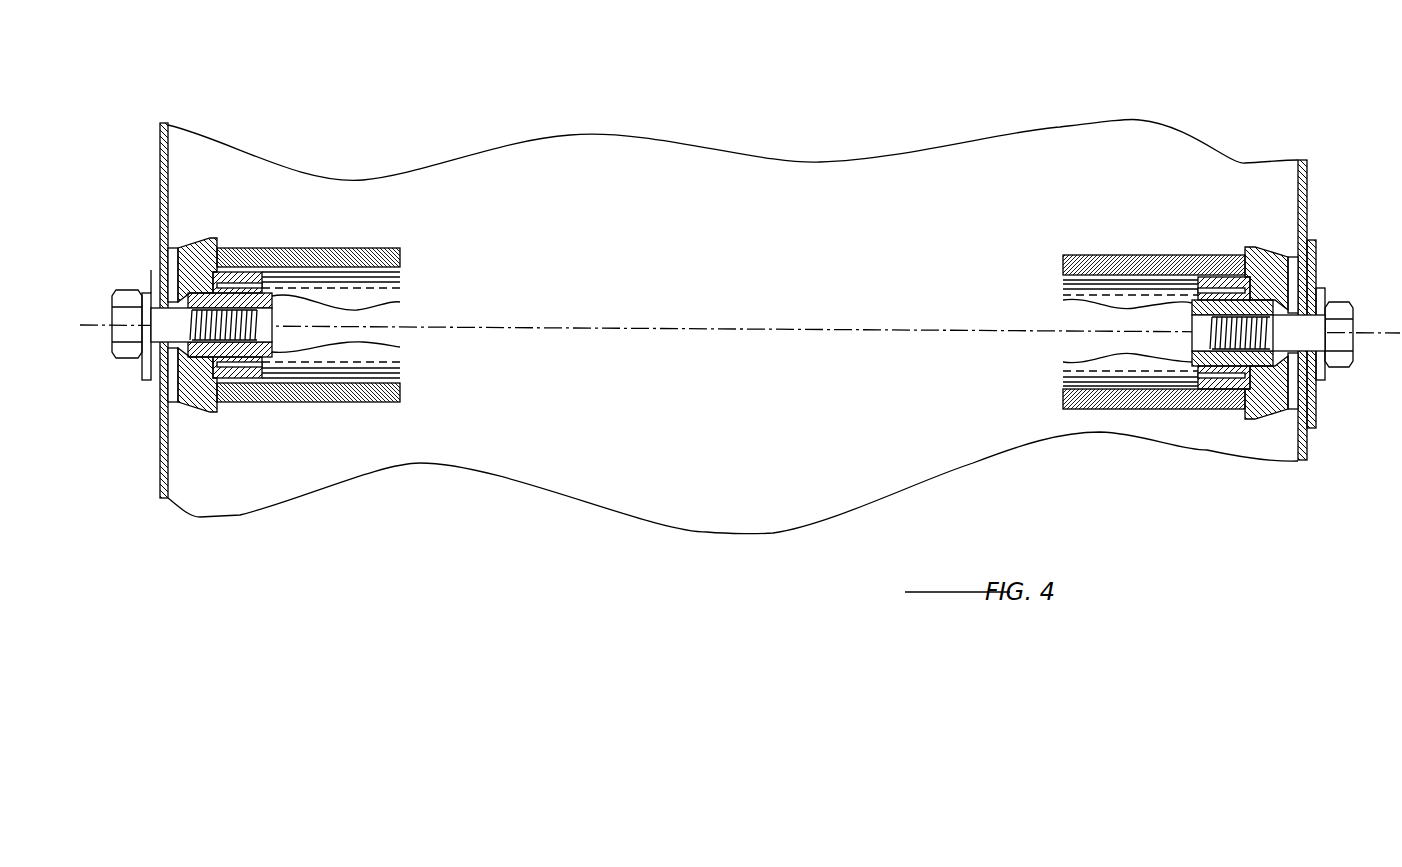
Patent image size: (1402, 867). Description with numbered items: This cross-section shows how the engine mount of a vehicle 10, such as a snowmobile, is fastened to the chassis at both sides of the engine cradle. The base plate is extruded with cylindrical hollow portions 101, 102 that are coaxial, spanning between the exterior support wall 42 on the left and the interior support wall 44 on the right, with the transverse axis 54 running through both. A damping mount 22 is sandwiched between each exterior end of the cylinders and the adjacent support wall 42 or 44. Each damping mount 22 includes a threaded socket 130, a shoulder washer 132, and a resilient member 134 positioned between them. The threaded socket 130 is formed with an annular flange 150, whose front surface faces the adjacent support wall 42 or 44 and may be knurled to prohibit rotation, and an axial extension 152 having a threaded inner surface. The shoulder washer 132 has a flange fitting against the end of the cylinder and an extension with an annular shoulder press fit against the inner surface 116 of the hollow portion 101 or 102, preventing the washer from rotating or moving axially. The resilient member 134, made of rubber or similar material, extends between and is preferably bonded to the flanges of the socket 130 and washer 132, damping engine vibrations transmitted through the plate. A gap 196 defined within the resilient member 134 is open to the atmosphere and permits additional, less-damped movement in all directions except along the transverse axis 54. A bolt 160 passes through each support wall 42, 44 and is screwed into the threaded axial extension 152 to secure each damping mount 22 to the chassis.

The vehicle 10 is at (143, 178).
The damping mount 22 is at (194, 228).
The exterior support wall 42 is at (1296, 441).
The interior support wall 44 is at (142, 472).
The transverse axis 54 is at (767, 327).
The hollow portion 101 is at (390, 247).
The hollow portion 102 is at (1063, 255).
The inner surface 116 is at (413, 398).
The threaded socket 130 is at (400, 300).
The shoulder washer 132 is at (248, 272).
The resilient member 134 is at (197, 413).
The flange 150 is at (1314, 408).
The axial extension 152 is at (400, 345).
The bolt 160 is at (125, 290).
The gap 196 is at (282, 288).